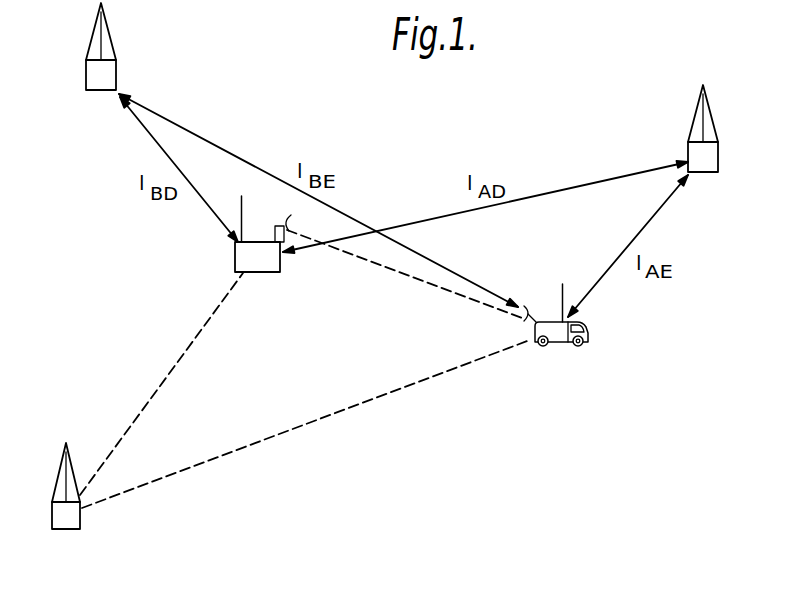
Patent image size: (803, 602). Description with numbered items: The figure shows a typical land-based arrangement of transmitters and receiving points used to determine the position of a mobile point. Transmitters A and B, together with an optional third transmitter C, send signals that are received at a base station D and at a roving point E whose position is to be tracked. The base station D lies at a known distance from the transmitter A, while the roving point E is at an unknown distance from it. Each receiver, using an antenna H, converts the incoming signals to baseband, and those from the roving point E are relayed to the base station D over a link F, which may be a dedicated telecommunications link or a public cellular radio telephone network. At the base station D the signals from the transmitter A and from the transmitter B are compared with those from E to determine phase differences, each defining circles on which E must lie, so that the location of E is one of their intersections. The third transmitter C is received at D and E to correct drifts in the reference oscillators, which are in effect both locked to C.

The transmitter A is at (712, 128).
The transmitter B is at (110, 46).
The third transmitter C is at (54, 486).
The base station D is at (249, 244).
The roving point E is at (567, 326).
The link F is at (404, 274).
The antenna H is at (399, 258).